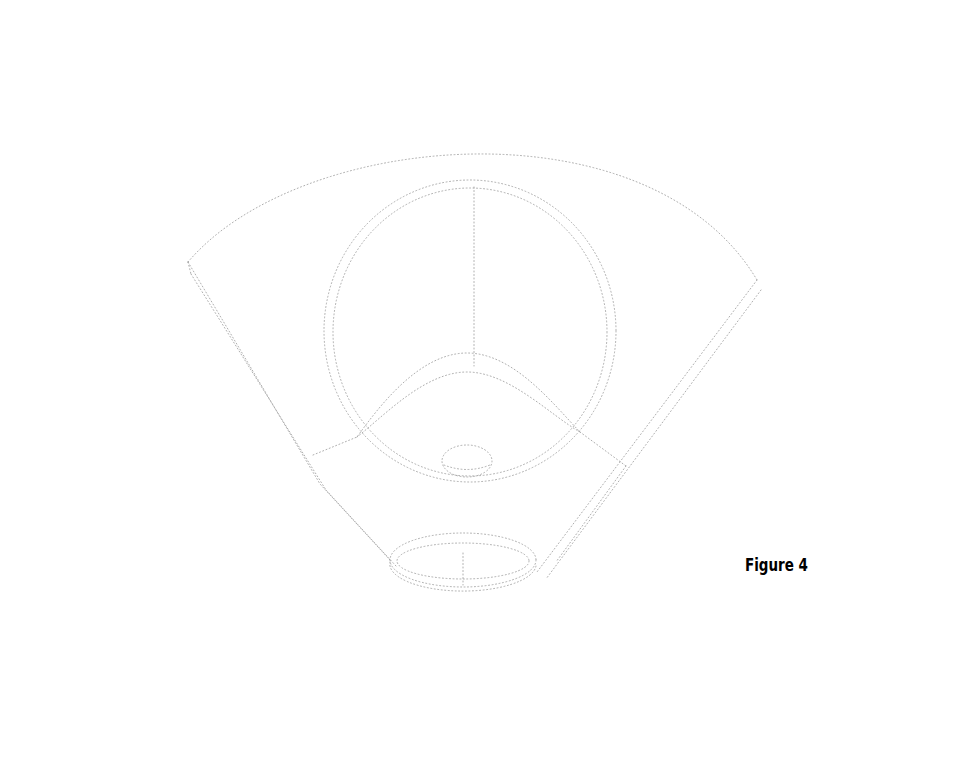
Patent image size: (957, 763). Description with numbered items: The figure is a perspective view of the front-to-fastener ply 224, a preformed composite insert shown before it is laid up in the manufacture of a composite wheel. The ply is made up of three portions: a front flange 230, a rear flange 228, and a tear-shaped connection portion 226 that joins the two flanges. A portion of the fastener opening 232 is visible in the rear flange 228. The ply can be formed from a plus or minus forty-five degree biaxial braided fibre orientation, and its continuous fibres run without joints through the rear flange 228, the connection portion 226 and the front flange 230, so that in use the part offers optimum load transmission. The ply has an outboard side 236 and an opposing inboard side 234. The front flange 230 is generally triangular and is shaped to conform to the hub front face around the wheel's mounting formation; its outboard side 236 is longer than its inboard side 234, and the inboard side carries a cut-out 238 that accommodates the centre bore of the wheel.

The front-to-fastener ply 224 is at (550, 108).
The connection portion 226 is at (535, 260).
The rear flange 228 is at (428, 413).
The front flange 230 is at (728, 292).
The fastener opening 232 is at (467, 460).
The inboard side 234 is at (347, 559).
The outboard side 236 is at (222, 232).
The cut-out 238 is at (487, 543).